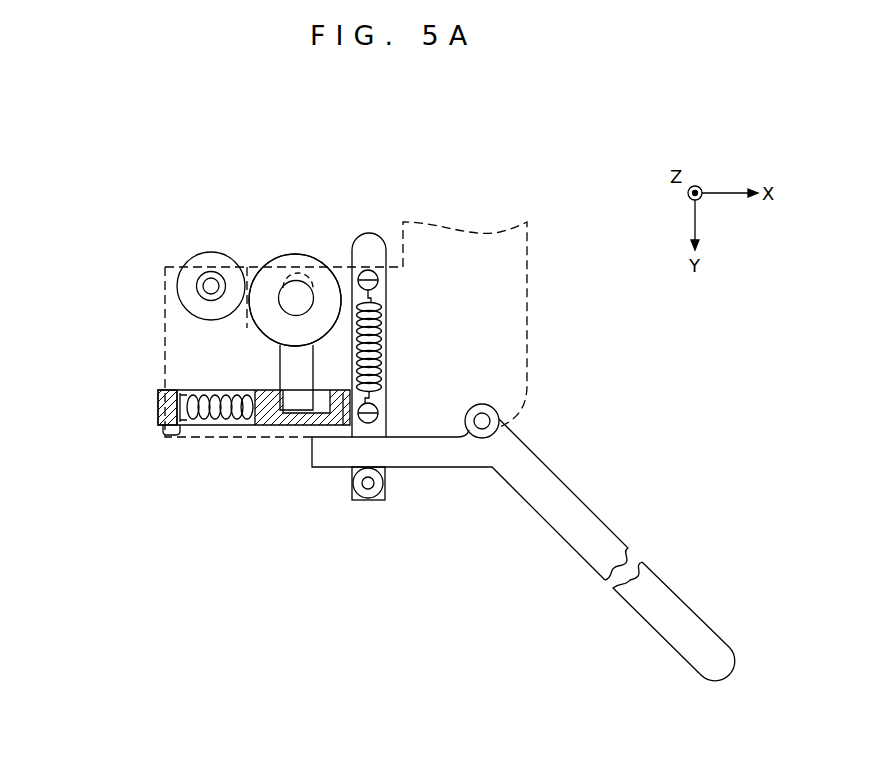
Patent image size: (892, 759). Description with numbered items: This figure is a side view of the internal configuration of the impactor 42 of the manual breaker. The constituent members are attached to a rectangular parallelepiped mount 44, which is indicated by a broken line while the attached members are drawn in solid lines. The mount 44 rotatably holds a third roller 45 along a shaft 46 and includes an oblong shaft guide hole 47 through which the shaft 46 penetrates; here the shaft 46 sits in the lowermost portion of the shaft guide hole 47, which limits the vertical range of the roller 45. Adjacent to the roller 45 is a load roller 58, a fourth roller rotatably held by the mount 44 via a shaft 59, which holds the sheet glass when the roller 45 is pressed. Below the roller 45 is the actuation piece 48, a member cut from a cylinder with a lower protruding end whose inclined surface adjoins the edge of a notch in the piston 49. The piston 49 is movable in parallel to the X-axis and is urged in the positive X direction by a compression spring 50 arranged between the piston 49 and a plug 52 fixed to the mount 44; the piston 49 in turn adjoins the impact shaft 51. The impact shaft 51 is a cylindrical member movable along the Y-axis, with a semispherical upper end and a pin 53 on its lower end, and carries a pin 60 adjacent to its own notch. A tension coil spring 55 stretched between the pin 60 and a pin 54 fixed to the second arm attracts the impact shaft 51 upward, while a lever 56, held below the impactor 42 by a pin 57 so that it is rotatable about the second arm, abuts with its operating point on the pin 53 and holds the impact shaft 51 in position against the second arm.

The impactor 42 is at (275, 476).
The mount 44 is at (527, 307).
The third roller 45 is at (287, 257).
The shaft 46 is at (280, 300).
The shaft guide hole 47 is at (303, 280).
The actuation piece 48 is at (282, 371).
The piston 49 is at (252, 425).
The compression spring 50 is at (188, 418).
The impact shaft 51 is at (374, 234).
The plug 52 is at (158, 402).
The pin 53 is at (370, 488).
The pin 54 is at (378, 282).
The tension coil spring 55 is at (382, 350).
The lever 56 is at (580, 497).
The pin 57 is at (488, 420).
The load roller 58 is at (183, 258).
The shaft 59 is at (203, 289).
The pin 60 is at (378, 412).